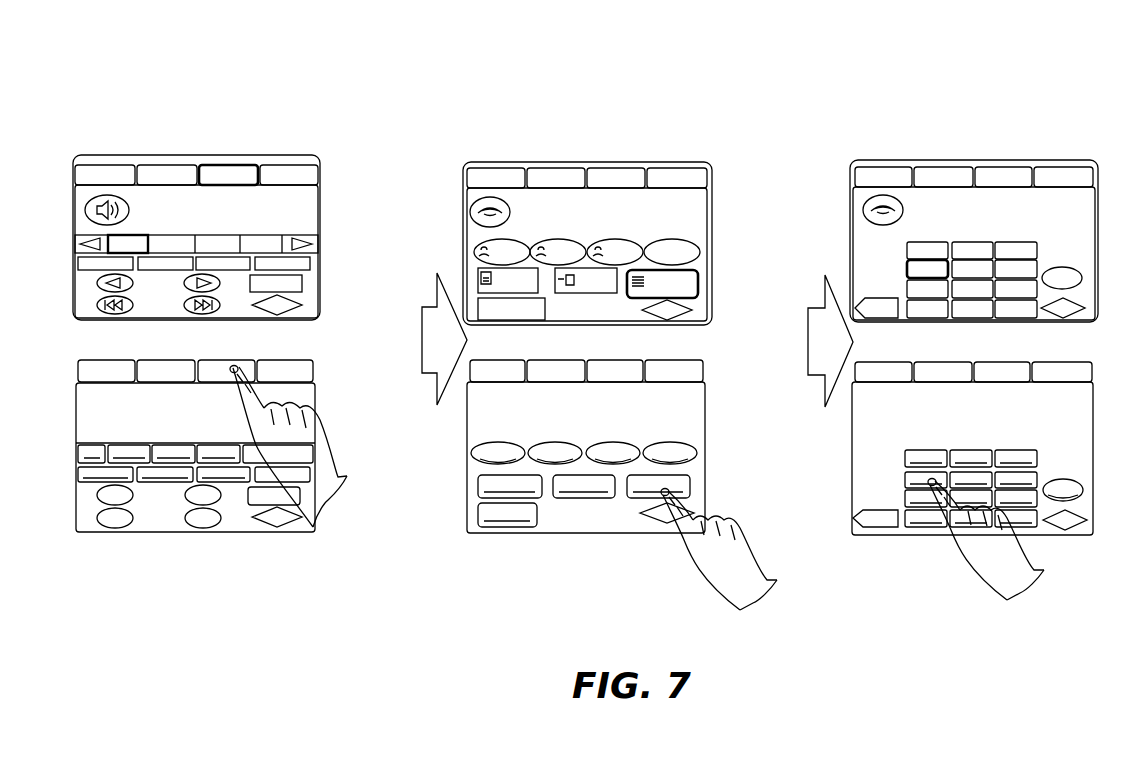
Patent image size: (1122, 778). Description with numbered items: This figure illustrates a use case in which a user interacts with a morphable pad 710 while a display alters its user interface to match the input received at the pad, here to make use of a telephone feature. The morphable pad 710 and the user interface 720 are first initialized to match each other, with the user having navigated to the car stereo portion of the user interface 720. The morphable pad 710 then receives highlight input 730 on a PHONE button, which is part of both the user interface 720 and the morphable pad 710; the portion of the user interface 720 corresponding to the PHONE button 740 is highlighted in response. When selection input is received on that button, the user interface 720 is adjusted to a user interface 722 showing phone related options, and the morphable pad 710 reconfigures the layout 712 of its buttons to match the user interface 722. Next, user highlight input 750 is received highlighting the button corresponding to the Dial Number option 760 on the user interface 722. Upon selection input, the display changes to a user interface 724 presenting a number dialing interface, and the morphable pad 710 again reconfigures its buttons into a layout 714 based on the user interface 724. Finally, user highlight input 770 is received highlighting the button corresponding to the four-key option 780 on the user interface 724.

The morphable pad 710 is at (211, 480).
The layout 712 is at (622, 485).
The layout 714 is at (972, 483).
The user interface 720 is at (196, 198).
The user interface 722 is at (587, 205).
The user interface 724 is at (974, 201).
The highlight input 730 is at (220, 380).
The PHONE button 740 is at (237, 165).
The highlight input 750 is at (663, 485).
The Dial Number option 760 is at (670, 275).
The highlight input 770 is at (927, 490).
The 4 option 780 is at (935, 268).